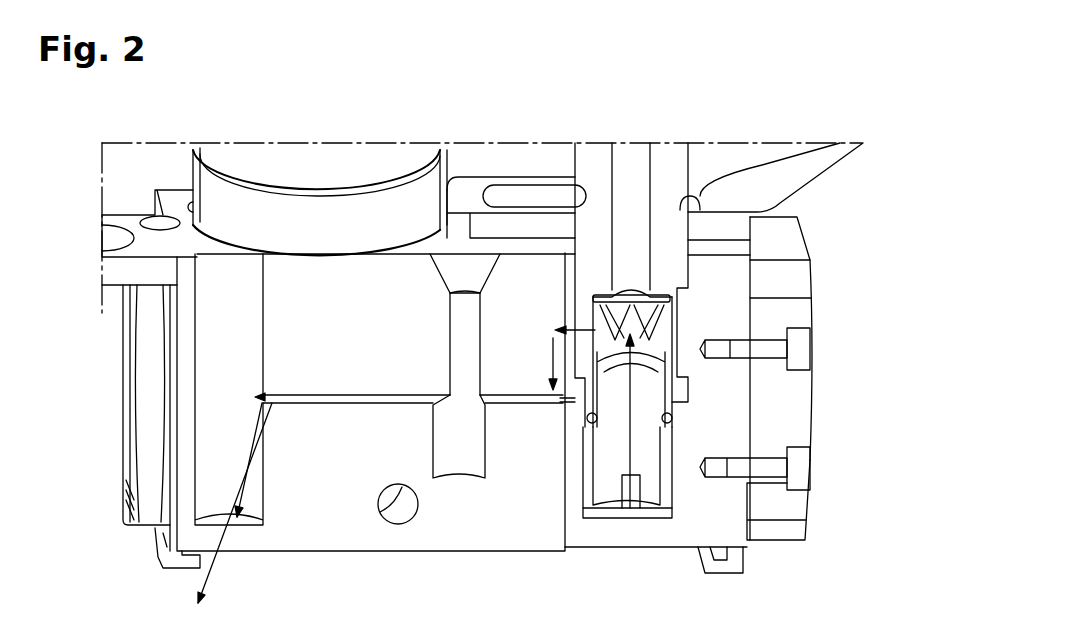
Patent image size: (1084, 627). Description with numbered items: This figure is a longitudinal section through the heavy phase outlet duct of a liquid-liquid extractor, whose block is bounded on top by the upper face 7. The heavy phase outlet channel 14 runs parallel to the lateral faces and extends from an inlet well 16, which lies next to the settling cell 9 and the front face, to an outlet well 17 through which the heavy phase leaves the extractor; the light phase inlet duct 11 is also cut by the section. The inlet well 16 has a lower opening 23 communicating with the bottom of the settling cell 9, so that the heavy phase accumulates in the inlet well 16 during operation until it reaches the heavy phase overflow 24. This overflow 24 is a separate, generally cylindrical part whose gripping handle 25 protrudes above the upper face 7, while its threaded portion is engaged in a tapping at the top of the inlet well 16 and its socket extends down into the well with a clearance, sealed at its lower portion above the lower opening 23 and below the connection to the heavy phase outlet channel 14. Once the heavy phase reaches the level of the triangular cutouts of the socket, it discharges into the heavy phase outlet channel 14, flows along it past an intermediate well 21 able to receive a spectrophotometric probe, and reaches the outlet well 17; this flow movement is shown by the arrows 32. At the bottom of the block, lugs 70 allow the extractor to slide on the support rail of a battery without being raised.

The upper face 7 is at (740, 246).
The settling cell 9 is at (523, 198).
The light phase inlet duct 11 is at (407, 508).
The heavy phase outlet channel 14 is at (531, 395).
The inlet well 16 is at (642, 500).
The outlet well 17 is at (227, 284).
The intermediate well 21 is at (463, 332).
The lower opening 23 is at (636, 492).
The heavy phase overflow 24 is at (690, 370).
The gripping handle 25 is at (700, 158).
The arrows 32 is at (323, 397).
The lugs 70 is at (148, 564).